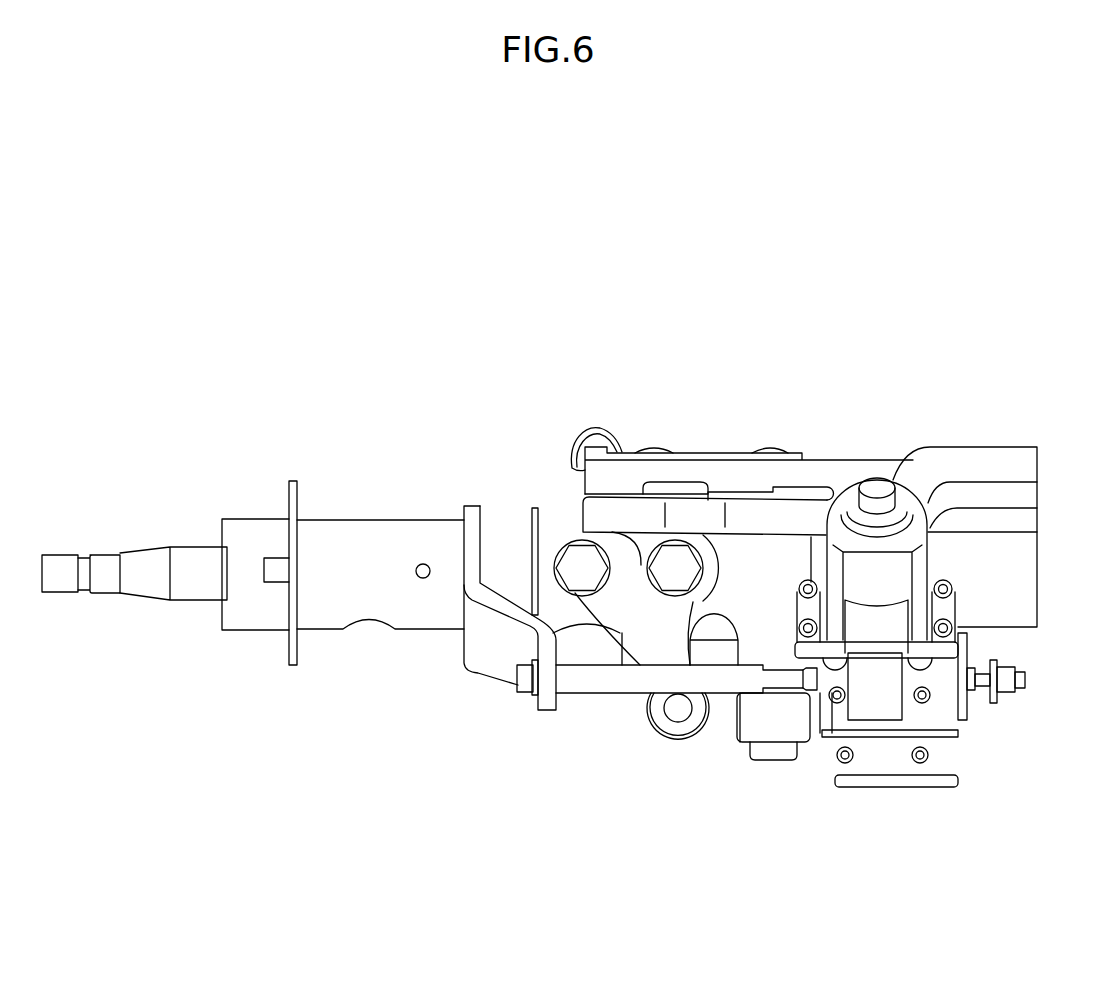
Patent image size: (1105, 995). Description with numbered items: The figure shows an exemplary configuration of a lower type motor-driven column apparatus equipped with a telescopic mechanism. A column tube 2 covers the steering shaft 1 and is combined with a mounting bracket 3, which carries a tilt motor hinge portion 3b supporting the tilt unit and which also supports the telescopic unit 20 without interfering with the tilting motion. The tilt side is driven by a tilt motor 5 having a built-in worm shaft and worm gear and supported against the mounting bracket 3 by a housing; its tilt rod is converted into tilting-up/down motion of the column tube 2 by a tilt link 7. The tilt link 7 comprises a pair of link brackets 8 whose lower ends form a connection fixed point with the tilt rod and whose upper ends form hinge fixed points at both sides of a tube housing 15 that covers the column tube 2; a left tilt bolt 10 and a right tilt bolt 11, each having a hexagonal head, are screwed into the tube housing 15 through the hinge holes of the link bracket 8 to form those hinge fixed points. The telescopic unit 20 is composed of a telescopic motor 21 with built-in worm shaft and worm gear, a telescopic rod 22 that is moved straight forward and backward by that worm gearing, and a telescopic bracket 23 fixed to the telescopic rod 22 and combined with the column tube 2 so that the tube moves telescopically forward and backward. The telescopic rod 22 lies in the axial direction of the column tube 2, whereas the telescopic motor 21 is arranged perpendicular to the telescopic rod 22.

The steering shaft 1 is at (105, 583).
The column tube 2 is at (247, 527).
The mounting bracket 3 is at (763, 477).
The tilt motor hinge portion 3b is at (780, 570).
The tilt motor 5 is at (877, 743).
The tilt link 7 is at (601, 461).
The link bracket 8 is at (627, 583).
The left tilt bolt 10 is at (582, 563).
The right tilt bolt 11 is at (675, 563).
The tube housing 15 is at (552, 522).
The telescopic unit 20 is at (629, 686).
The telescopic motor 21 is at (897, 572).
The telescopic rod 22 is at (612, 682).
The telescopic bracket 23 is at (497, 638).